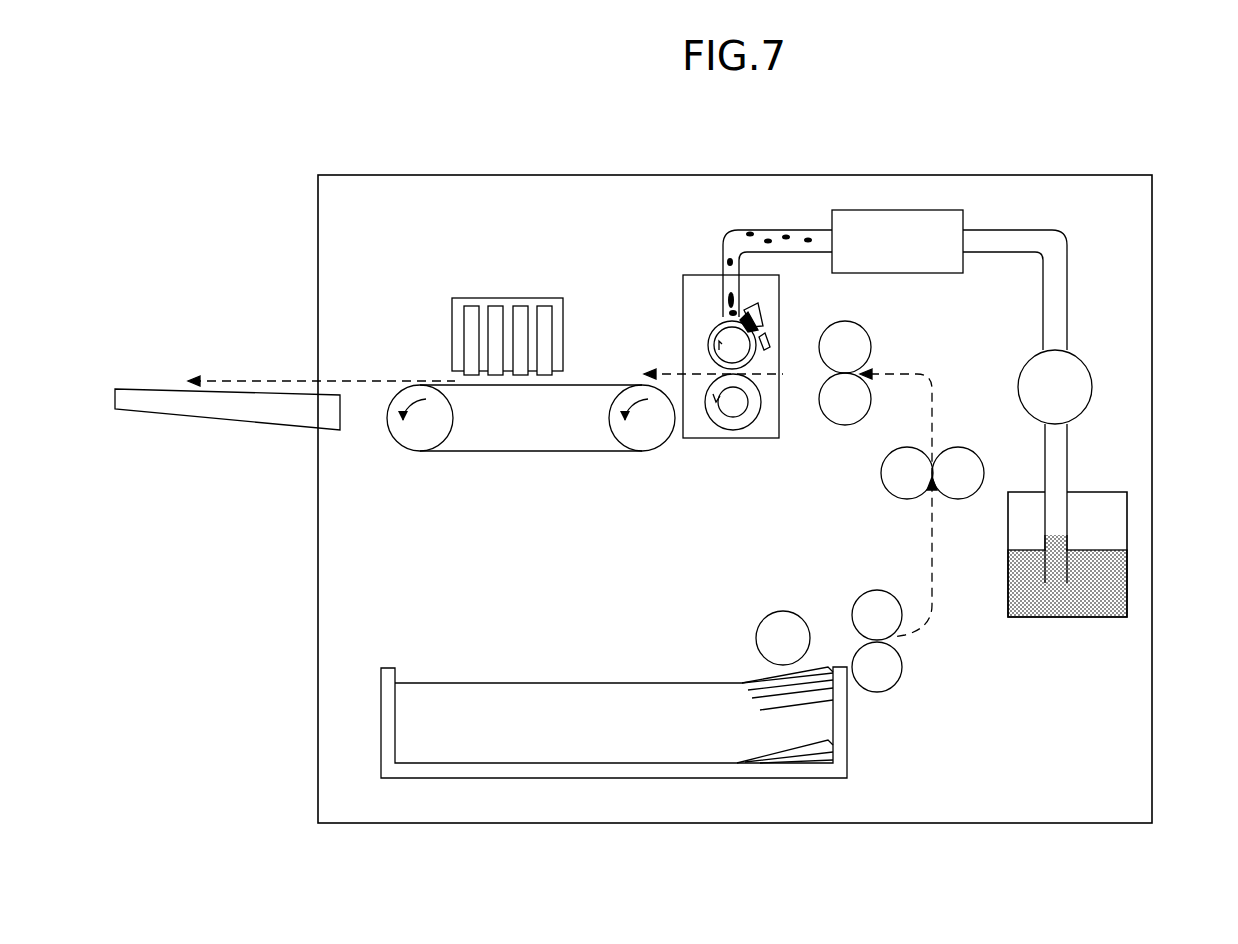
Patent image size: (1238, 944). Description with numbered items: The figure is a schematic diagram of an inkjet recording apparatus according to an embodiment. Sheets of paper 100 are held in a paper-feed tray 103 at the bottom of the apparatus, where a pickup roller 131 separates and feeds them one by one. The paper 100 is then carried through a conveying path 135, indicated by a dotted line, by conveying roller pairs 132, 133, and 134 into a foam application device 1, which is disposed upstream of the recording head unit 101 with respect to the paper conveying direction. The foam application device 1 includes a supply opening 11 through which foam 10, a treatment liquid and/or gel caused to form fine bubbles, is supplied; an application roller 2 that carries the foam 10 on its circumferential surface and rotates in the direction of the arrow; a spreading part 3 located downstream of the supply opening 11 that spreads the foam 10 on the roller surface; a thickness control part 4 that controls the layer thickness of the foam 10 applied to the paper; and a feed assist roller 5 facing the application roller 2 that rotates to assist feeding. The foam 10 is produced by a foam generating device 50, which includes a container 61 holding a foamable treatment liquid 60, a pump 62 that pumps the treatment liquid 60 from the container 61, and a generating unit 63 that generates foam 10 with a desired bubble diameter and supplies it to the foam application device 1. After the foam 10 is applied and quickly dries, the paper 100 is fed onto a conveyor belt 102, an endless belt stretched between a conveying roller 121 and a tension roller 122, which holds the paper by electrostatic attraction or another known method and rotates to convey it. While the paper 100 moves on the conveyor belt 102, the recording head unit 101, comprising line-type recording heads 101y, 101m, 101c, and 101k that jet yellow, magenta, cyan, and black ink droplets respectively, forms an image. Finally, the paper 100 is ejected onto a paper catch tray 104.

The foam application device 1 is at (679, 302).
The application roller 2 is at (710, 341).
The spreading part 3 is at (752, 316).
The thickness control part 4 is at (766, 344).
The feed assist roller 5 is at (734, 418).
The foam 10 is at (731, 282).
The supply opening 11 is at (727, 307).
The foam generating device 50 is at (1078, 213).
The treatment liquid 60 is at (1108, 575).
The container 61 is at (1127, 520).
The pump 62 is at (1082, 387).
The generating unit 63 is at (897, 218).
The paper 100 is at (616, 702).
The recording head unit 101 is at (450, 316).
The recording head 101k is at (470, 310).
The recording head 101c is at (495, 310).
The recording head 101m is at (520, 310).
The recording head 101y is at (545, 310).
The conveyor belt 102 is at (516, 453).
The paper-feed tray 103 is at (553, 768).
The paper catch tray 104 is at (208, 410).
The conveying roller 121 is at (632, 440).
The tension roller 122 is at (412, 440).
The pickup roller 131 is at (780, 628).
The conveying roller pair 132 is at (890, 666).
The conveying roller pair 133 is at (940, 475).
The conveying roller pair 134 is at (851, 412).
The conveying path 135 is at (932, 383).